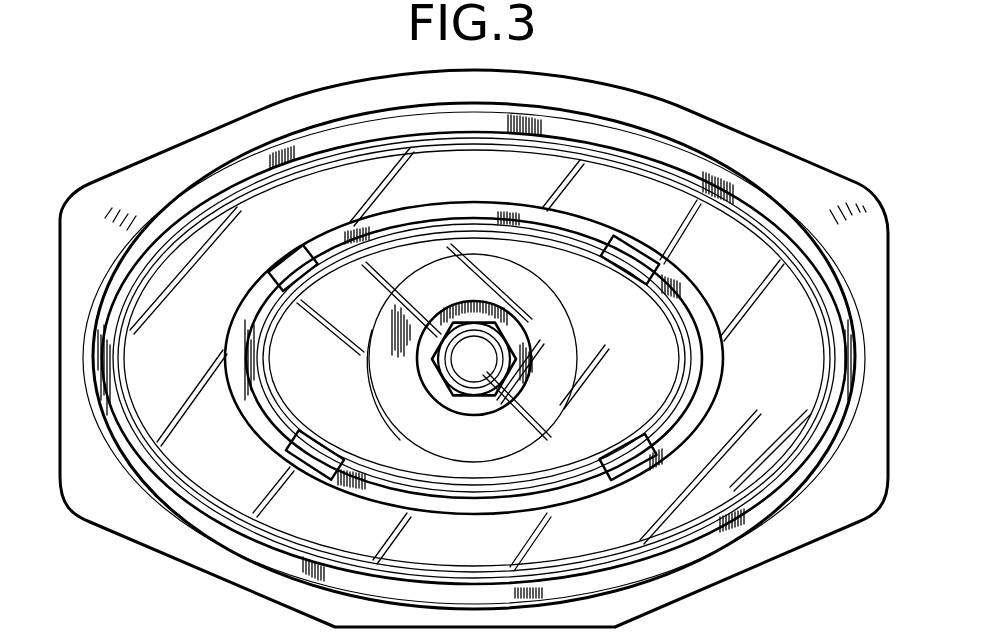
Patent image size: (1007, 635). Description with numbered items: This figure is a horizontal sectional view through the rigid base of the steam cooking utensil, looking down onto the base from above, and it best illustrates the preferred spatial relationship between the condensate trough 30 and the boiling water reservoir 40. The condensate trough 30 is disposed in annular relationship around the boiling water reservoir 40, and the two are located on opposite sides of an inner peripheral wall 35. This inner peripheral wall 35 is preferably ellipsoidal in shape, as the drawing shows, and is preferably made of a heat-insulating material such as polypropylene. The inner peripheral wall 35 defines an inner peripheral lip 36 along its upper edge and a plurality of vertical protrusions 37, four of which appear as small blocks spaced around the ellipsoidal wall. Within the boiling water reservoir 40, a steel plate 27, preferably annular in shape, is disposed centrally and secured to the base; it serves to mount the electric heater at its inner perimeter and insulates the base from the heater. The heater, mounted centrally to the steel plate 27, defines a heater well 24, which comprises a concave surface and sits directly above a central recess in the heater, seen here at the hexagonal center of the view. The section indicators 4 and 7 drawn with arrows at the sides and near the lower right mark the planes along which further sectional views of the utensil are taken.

The heater well 24 is at (474, 358).
The steel plate 27 is at (472, 358).
The condensate trough 30 is at (474, 356).
The inner peripheral wall 35 is at (597, 236).
The inner peripheral lip 36 is at (641, 257).
The vertical protrusions 37 is at (302, 265).
The boiling water reservoir 40 is at (474, 358).
The section line 7- 7 is at (657, 490).
The section line 4- 4 is at (28, 322).